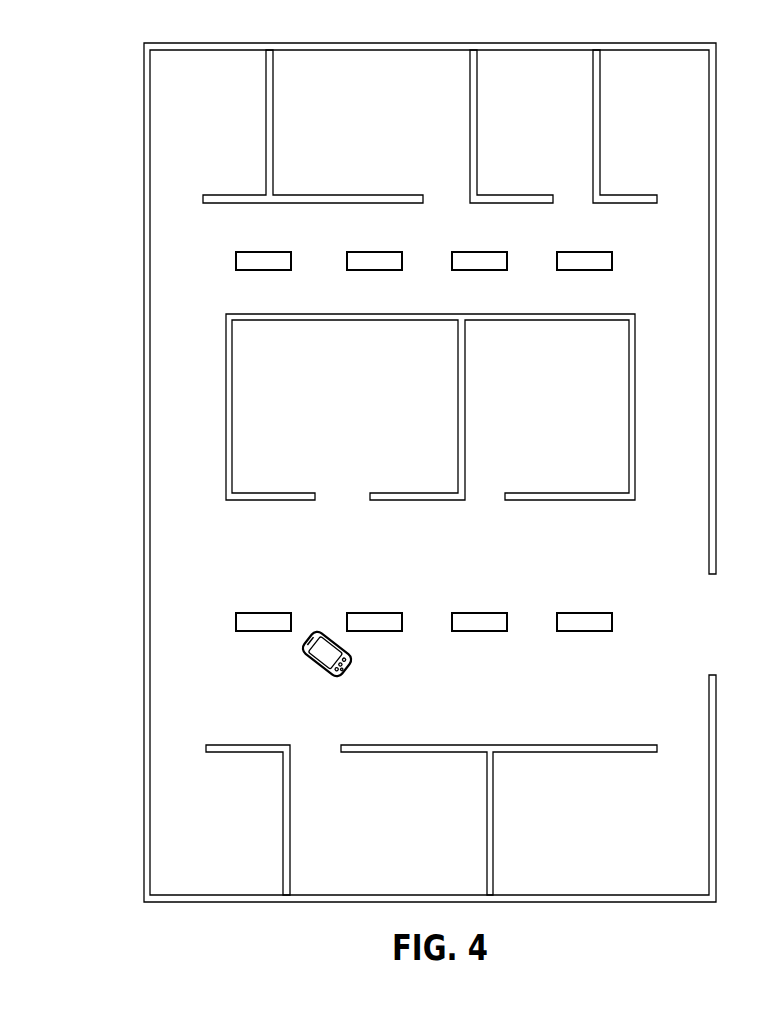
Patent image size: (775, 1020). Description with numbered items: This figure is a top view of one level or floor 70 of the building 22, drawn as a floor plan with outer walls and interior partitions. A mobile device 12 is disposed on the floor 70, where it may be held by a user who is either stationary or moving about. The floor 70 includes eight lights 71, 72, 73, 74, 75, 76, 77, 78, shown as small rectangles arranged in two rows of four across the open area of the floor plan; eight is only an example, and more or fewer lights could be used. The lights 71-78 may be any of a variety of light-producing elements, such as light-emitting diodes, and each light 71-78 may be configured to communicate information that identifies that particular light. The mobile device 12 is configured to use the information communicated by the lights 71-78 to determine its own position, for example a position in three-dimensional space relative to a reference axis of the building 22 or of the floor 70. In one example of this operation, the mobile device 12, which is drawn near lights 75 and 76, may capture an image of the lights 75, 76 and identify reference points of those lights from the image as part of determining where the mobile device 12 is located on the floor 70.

The mobile device 12 is at (351, 666).
The building 22 is at (144, 375).
The floor 70 is at (144, 617).
The light 71 is at (264, 252).
The light 72 is at (375, 252).
The light 73 is at (480, 252).
The light 74 is at (585, 252).
The light 75 is at (264, 613).
The light 76 is at (375, 613).
The light 77 is at (480, 613).
The light 78 is at (585, 613).